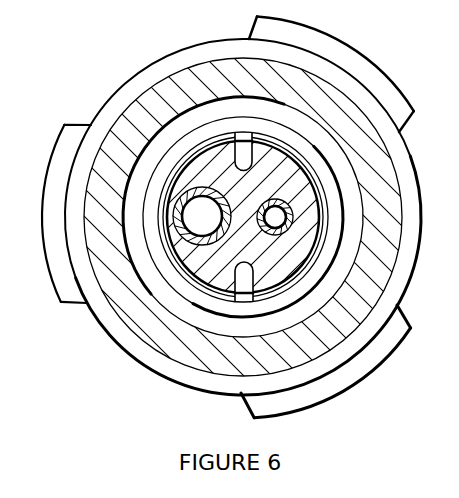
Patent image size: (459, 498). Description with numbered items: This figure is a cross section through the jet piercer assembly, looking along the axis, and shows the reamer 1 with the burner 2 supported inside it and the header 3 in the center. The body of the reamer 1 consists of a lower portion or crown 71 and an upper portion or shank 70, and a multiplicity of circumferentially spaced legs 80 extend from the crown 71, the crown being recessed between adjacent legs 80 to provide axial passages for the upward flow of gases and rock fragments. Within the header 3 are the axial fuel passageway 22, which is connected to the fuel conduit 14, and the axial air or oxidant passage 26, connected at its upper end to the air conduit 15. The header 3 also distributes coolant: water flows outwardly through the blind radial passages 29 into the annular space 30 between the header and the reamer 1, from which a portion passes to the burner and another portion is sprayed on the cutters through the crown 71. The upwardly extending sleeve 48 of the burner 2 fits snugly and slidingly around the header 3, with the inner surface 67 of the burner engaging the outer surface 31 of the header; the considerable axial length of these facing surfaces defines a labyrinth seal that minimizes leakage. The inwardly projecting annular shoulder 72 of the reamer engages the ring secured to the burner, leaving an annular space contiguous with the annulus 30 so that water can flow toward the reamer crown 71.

The reamer 1 is at (130, 65).
The burner 2 is at (192, 313).
The header 3 is at (334, 228).
The fuel conduit 14 is at (288, 205).
The oxidant conduit 15 is at (187, 190).
The axial fuel passageway 22 is at (229, 215).
The axial oxidant passage 26 is at (215, 224).
The radial passages 29 is at (246, 147).
The annular space 30 is at (337, 158).
The outer surface 31 is at (239, 302).
The burner sleeve 48 is at (177, 290).
The inner surface 67 is at (277, 327).
The shank 70 is at (130, 122).
The crown 71 is at (158, 62).
The annular shoulder 72 is at (257, 117).
The legs 80 is at (326, 34).